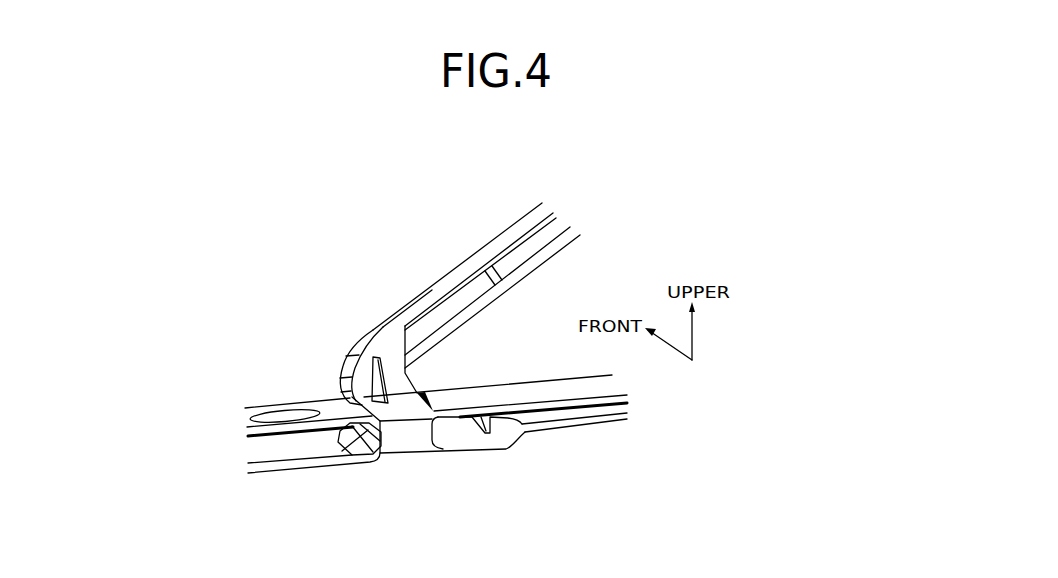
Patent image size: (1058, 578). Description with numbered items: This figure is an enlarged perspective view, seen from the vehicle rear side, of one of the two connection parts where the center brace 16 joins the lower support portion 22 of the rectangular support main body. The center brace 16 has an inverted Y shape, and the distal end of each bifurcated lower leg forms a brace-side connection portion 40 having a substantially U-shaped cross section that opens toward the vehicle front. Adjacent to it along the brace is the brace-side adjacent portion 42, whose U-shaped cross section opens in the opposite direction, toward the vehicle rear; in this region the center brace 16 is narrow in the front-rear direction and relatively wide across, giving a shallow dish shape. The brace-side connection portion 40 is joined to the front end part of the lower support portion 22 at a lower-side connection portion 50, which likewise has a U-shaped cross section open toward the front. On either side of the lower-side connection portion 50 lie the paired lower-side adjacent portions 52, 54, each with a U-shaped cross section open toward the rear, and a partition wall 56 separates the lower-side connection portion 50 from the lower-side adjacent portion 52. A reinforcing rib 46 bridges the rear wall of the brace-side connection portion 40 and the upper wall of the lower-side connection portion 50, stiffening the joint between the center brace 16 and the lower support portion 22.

The center brace 16 is at (488, 206).
The brace-side adjacent portion 42 is at (427, 294).
The brace-side connection portion 40 is at (387, 352).
The reinforcing rib 46 is at (342, 376).
The lower support portion 22 is at (563, 449).
The lower-side connection portion 50 is at (407, 443).
The lower-side adjacent portion 54 is at (466, 437).
The lower-side adjacent portion 52 is at (292, 452).
The partition wall 56 is at (357, 447).